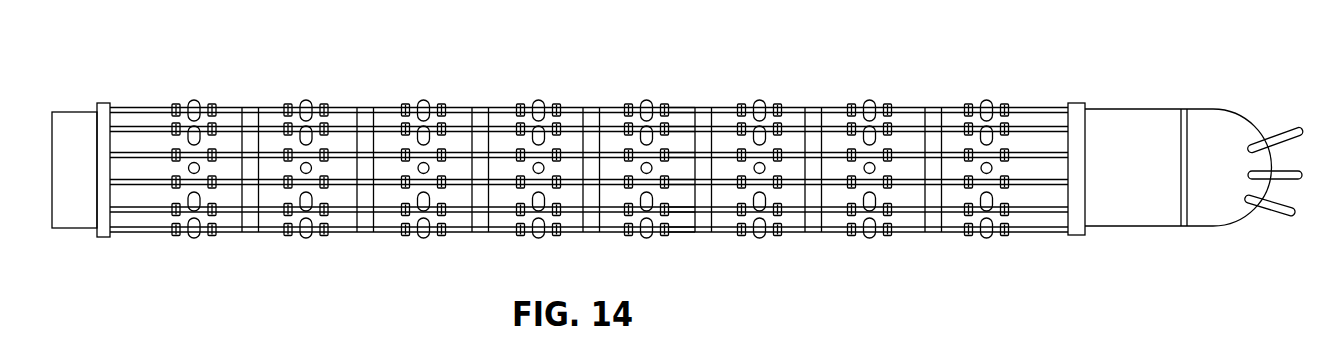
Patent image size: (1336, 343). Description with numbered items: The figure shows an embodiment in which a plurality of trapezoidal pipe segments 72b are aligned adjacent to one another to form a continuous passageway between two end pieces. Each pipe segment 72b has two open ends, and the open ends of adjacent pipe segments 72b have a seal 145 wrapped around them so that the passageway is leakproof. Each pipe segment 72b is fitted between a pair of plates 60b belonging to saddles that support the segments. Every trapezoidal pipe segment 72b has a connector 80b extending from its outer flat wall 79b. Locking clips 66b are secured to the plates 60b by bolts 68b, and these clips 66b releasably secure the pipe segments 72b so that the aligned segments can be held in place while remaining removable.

The seal 145 is at (250, 108).
The trapezoidal pipe segment 72b is at (505, 107).
The bolt 68b is at (412, 113).
The locking clip 66b is at (398, 190).
The connector 80b is at (544, 163).
The plate 60b is at (428, 161).
The outer flat wall 79b is at (677, 118).